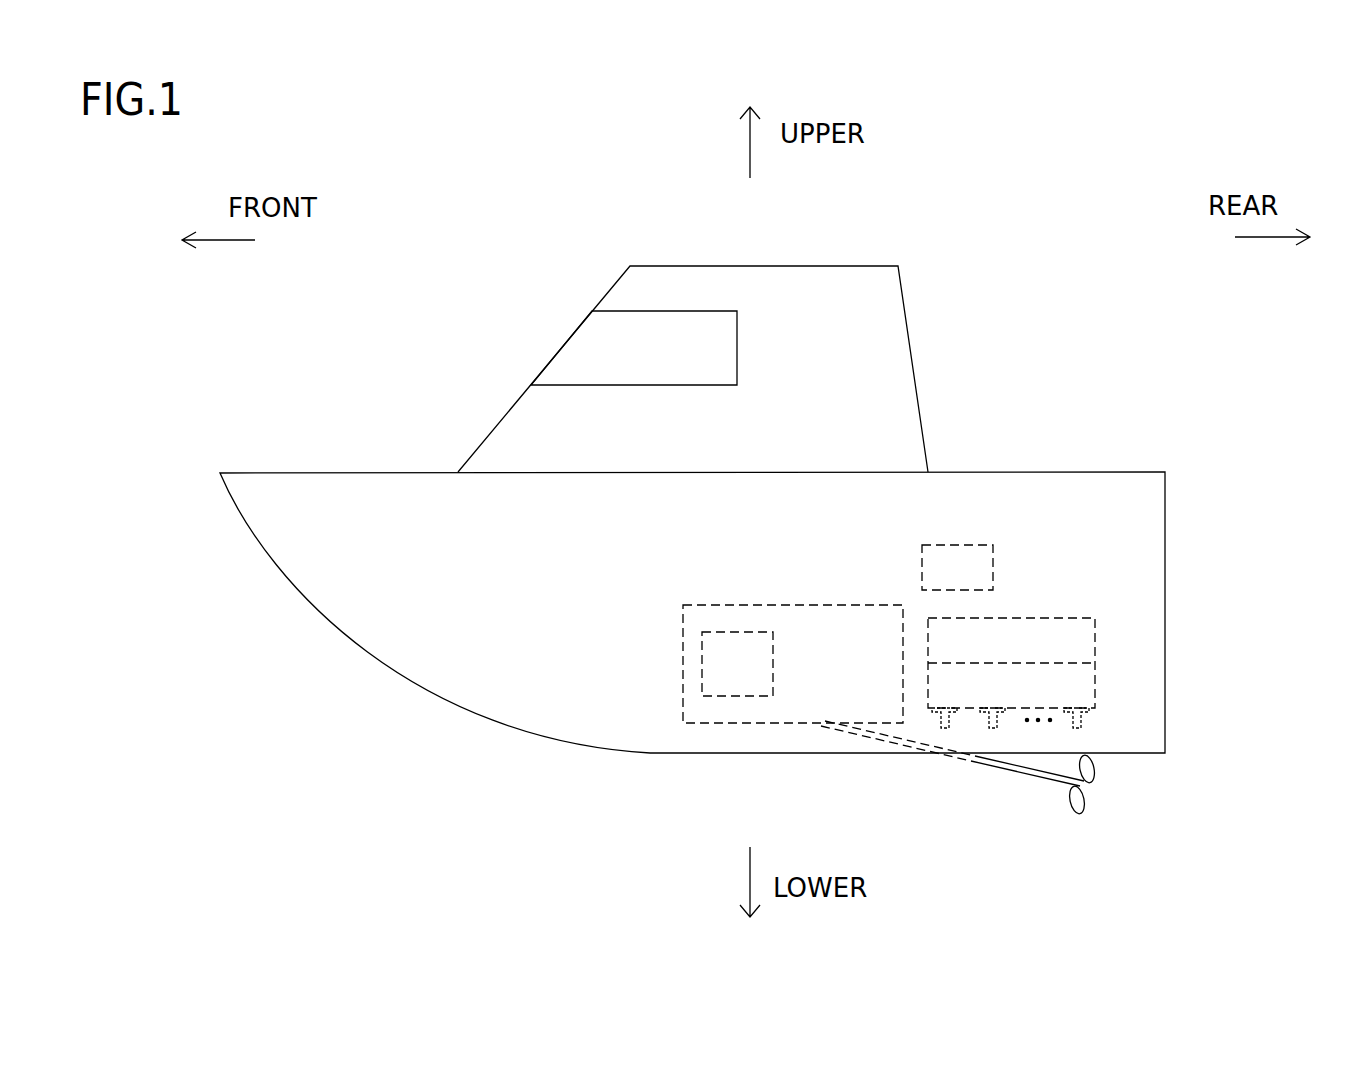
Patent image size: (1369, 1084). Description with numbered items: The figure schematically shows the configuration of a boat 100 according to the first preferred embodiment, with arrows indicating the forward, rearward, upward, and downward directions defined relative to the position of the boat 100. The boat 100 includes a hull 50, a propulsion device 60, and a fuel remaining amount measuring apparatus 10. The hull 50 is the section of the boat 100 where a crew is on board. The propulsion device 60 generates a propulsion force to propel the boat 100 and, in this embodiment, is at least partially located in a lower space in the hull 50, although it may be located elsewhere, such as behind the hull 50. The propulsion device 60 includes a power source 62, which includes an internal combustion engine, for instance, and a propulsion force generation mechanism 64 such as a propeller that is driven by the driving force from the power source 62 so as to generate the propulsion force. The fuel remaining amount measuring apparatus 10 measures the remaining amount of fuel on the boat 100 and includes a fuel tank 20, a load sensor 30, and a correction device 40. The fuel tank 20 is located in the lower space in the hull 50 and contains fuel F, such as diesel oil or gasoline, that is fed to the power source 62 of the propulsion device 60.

The boat 100 is at (702, 509).
The hull 50 is at (1055, 478).
The fuel remaining amount measuring apparatus 10 is at (1124, 618).
The fuel tank 20 is at (1095, 638).
The load sensor 30 is at (1084, 708).
The correction device 40 is at (993, 575).
The fuel F is at (1072, 684).
The propulsion device 60 is at (707, 712).
The power source 62 is at (703, 650).
The propulsion force generation mechanism 64 is at (1087, 812).